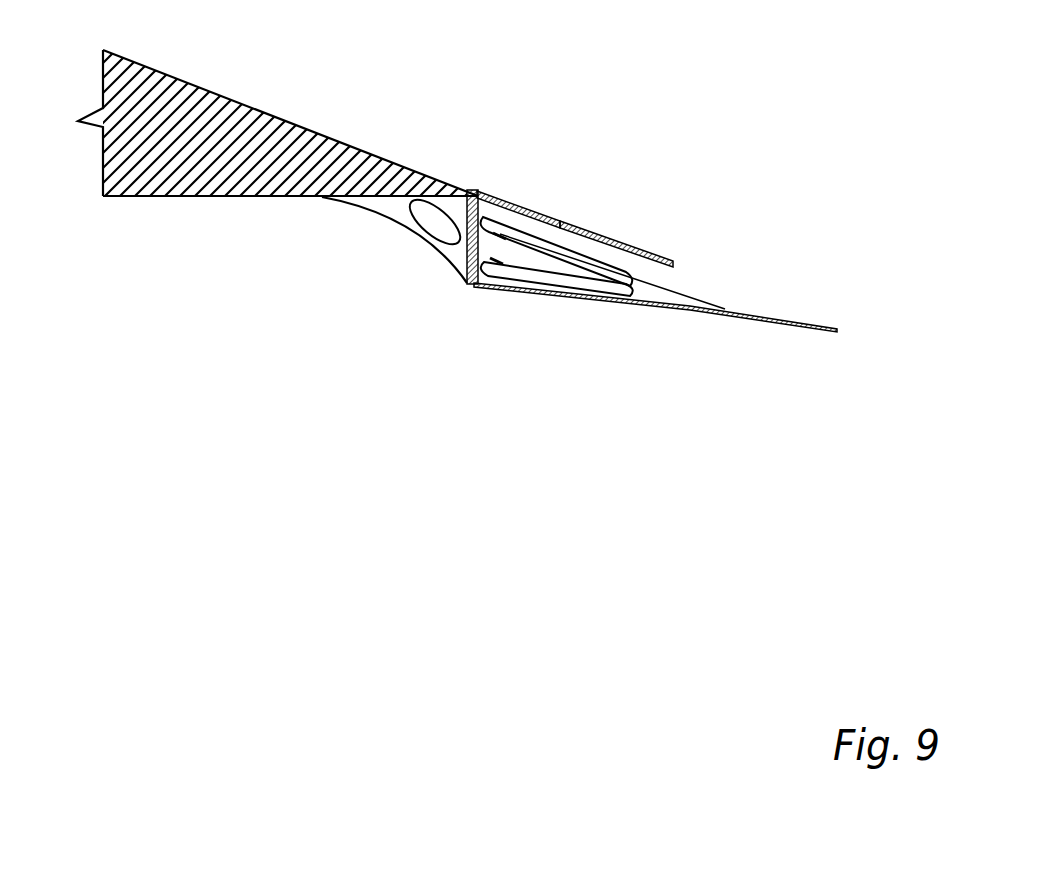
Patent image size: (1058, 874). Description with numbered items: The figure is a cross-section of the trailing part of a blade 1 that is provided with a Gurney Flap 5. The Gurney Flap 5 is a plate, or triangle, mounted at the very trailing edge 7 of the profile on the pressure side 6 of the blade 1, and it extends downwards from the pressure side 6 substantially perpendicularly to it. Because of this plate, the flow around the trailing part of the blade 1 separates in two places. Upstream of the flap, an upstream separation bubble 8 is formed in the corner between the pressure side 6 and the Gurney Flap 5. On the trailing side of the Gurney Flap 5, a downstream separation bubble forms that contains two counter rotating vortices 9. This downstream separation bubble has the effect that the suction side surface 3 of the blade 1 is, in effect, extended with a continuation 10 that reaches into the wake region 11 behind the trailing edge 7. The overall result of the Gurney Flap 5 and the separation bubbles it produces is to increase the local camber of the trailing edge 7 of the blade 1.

The blade 1 is at (283, 108).
The suction side surface 3 is at (362, 148).
The Gurney Flap 5 is at (467, 284).
The pressure side 6 is at (243, 197).
The trailing edge 7 is at (476, 193).
The upstream separation bubble 8 is at (395, 224).
The counter rotating vortices 9 is at (563, 258).
The continuation 10 is at (602, 238).
The wake region 11 is at (667, 235).